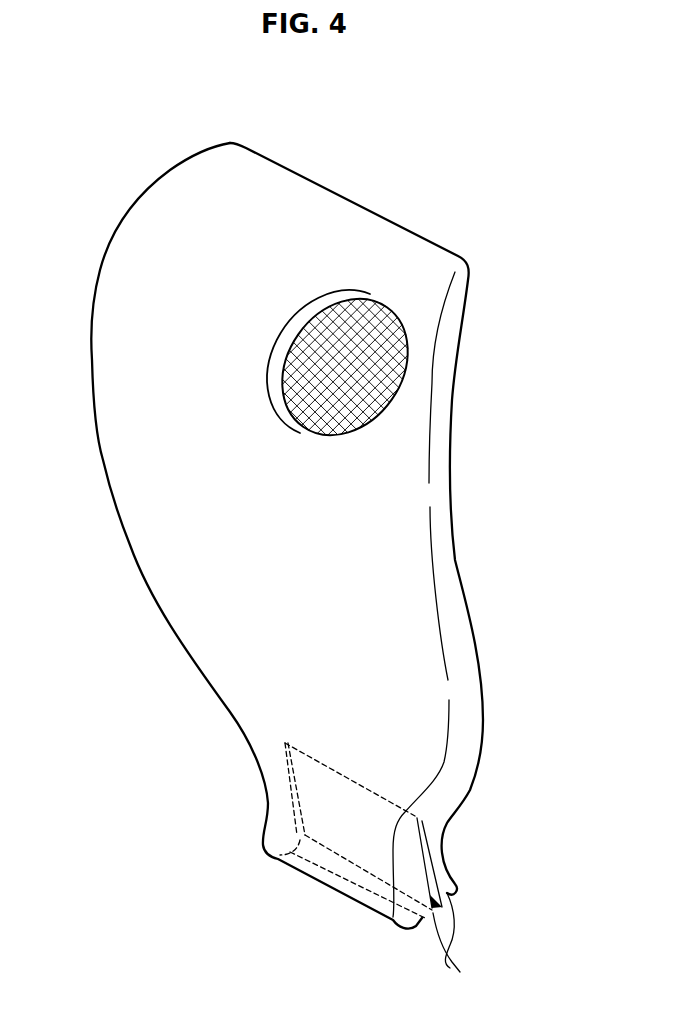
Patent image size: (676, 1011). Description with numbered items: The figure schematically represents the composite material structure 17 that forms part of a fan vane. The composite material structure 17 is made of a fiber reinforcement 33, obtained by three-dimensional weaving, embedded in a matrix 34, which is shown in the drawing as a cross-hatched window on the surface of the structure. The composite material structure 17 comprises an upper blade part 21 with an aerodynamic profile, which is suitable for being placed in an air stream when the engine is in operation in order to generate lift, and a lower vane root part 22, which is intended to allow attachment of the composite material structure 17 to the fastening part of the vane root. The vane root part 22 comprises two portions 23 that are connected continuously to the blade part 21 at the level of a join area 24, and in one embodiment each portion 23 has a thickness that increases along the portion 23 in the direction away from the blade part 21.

The composite material structure 17 is at (88, 331).
The blade part 21 is at (510, 260).
The vane root part 22 is at (510, 789).
The portion 23 is at (460, 972).
The join area 24 is at (360, 787).
The fiber reinforcement 33 is at (347, 363).
The matrix 34 is at (368, 288).